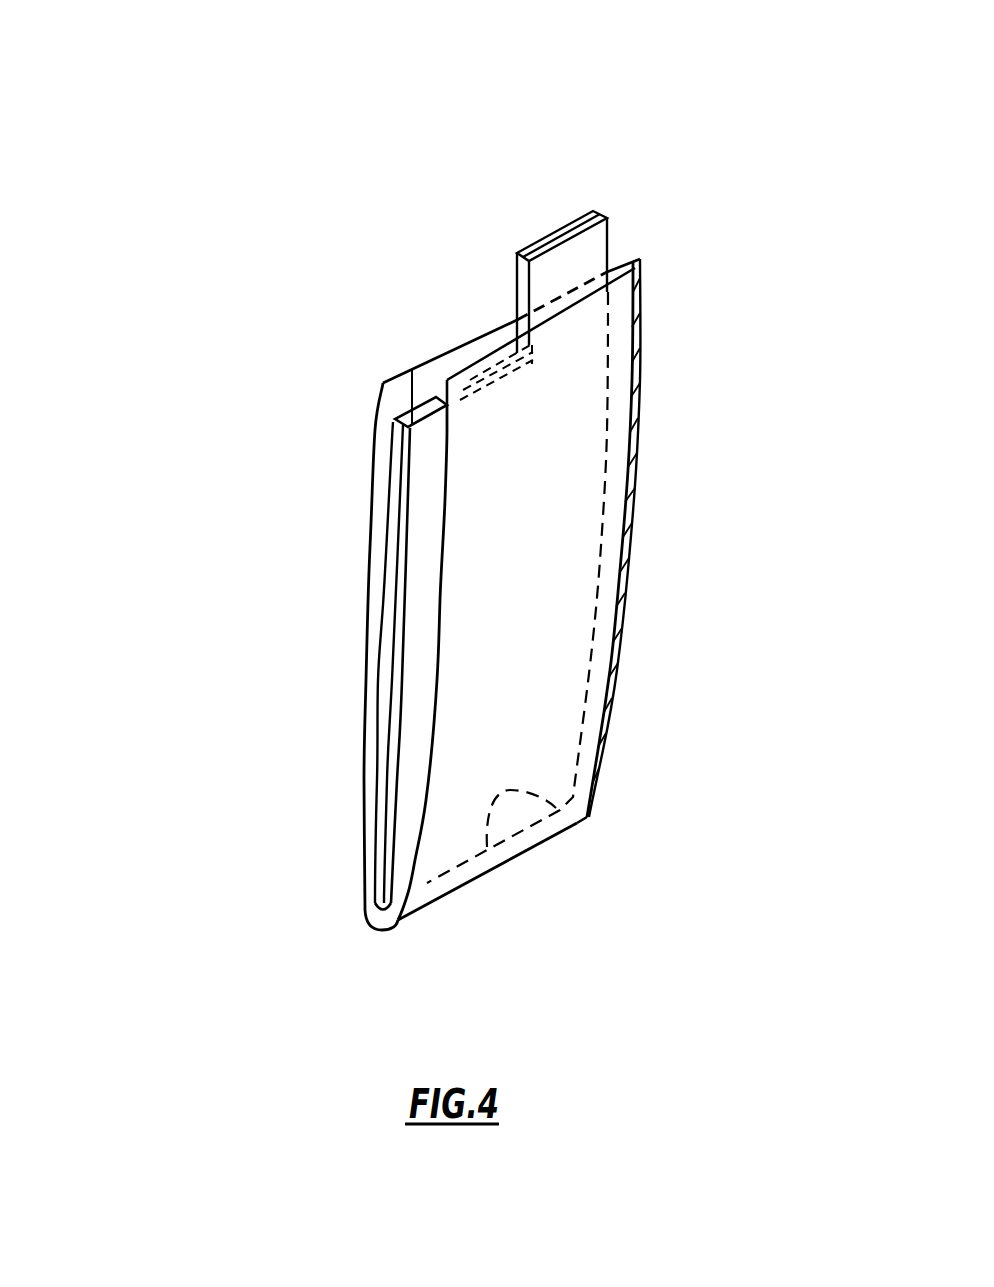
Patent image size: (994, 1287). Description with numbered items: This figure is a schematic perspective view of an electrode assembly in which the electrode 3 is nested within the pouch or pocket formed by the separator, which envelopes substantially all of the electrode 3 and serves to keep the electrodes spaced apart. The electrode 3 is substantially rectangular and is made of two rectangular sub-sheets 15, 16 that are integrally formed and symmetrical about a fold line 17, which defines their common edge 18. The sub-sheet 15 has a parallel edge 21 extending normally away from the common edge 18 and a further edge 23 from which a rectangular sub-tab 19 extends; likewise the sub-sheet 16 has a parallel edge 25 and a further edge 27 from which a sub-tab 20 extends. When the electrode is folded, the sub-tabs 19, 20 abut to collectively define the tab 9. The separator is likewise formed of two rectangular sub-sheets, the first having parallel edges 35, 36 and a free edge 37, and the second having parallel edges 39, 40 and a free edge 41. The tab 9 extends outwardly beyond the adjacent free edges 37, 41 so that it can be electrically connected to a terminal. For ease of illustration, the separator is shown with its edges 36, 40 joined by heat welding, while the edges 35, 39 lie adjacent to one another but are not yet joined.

The electrode 3 is at (286, 496).
The tab 9 is at (598, 178).
The sub-sheet 15 is at (415, 675).
The sub-sheet 16 is at (383, 605).
The fold line 17 is at (580, 823).
The common edge 18 is at (367, 905).
The sub-tab 19 is at (609, 238).
The sub-tab 20 is at (515, 253).
The edge 21 is at (405, 540).
The further edge 23 is at (425, 417).
The edge 25 is at (373, 815).
The further edge 27 is at (412, 370).
The edge 35 is at (372, 444).
The edge 36 is at (640, 254).
The free edge 37 is at (383, 383).
The edge 39 is at (423, 755).
The edge 40 is at (647, 278).
The free edge 41 is at (478, 368).